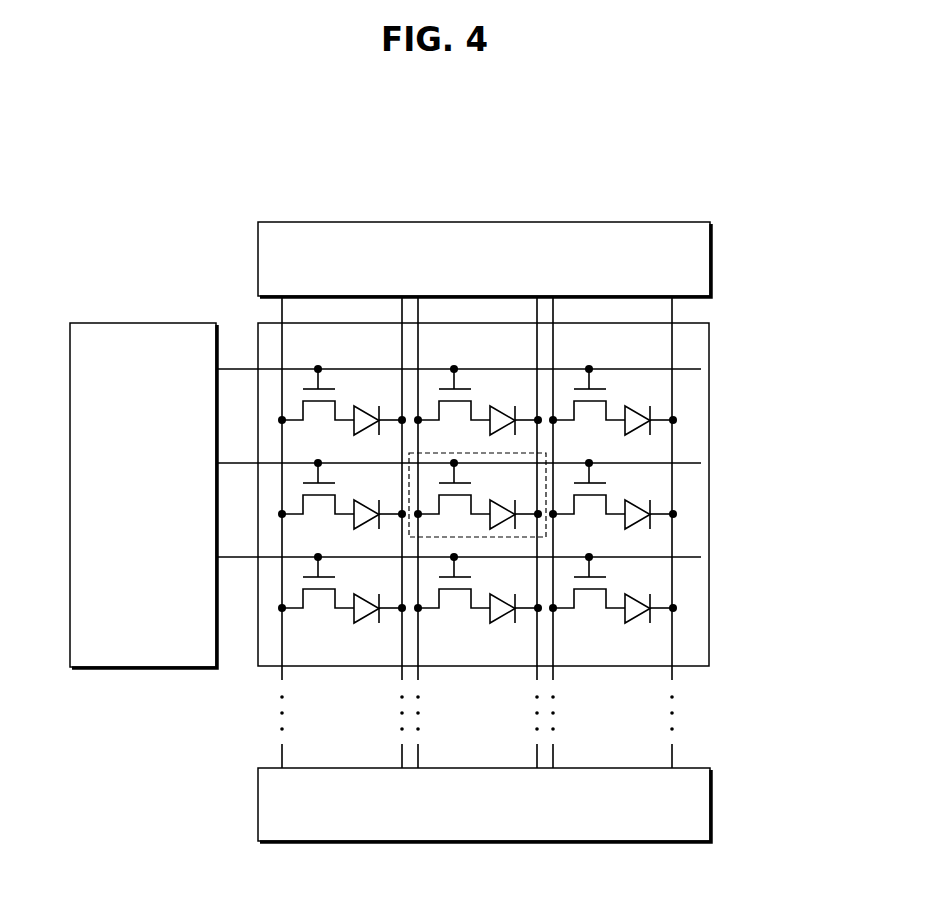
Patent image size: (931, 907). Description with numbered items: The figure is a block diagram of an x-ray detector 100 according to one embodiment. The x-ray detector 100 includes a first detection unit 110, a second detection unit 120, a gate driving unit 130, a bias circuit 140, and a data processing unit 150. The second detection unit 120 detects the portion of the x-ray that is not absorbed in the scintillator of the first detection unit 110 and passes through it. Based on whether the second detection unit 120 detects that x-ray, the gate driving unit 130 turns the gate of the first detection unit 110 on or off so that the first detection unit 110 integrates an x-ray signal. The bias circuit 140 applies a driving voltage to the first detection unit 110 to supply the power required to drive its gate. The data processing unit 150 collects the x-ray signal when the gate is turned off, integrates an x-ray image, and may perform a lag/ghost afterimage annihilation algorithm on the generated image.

The x-ray detector 100 is at (695, 170).
The first detection unit 110 is at (497, 532).
The second detection unit 120 is at (547, 477).
The gate driving unit 130 is at (155, 322).
The bias circuit 140 is at (711, 260).
The data processing unit 150 is at (711, 805).